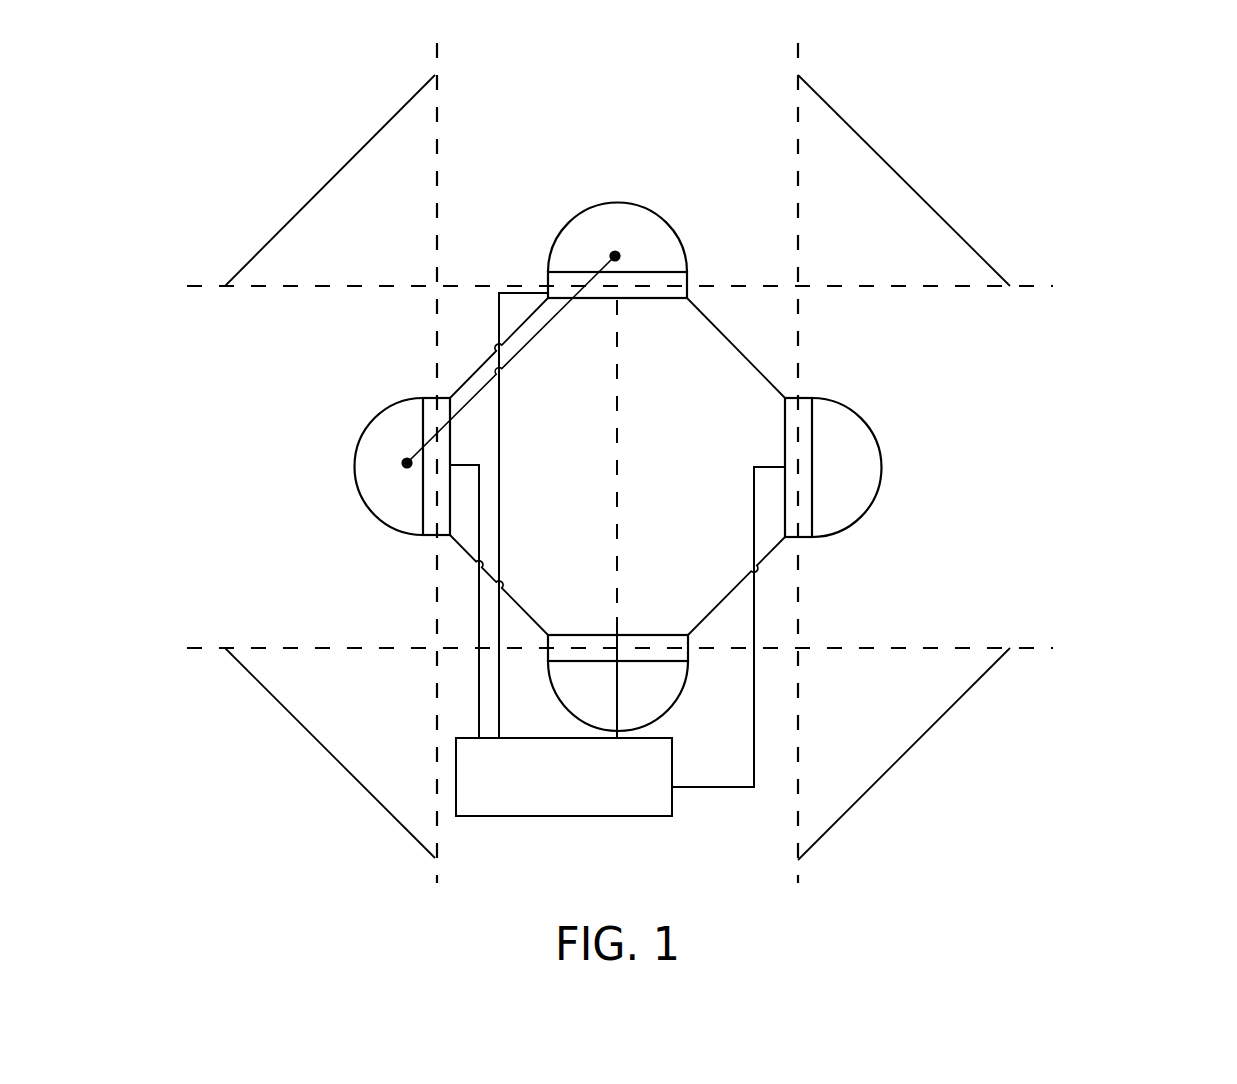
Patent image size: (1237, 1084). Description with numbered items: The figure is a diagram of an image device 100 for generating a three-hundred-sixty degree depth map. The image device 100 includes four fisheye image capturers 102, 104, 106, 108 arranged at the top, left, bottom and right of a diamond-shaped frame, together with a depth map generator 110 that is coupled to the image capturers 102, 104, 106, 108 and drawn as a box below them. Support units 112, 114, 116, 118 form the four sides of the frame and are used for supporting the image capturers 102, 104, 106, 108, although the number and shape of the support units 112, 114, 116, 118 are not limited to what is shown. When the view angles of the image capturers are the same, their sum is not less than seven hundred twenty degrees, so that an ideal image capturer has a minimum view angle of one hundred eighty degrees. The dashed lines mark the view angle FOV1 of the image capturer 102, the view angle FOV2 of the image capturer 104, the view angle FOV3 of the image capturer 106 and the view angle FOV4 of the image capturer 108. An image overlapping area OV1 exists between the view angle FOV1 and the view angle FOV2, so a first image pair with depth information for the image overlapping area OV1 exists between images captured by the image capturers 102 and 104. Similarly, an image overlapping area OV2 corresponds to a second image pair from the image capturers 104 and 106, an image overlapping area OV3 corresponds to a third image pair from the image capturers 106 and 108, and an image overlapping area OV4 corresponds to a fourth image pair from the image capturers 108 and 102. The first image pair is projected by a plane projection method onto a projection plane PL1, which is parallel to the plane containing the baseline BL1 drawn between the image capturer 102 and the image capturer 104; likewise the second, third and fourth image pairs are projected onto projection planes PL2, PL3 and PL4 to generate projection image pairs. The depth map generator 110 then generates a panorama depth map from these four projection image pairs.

The image device 100 is at (1085, 95).
The image capturer 102 is at (663, 220).
The image capturer 104 is at (355, 440).
The image capturer 106 is at (670, 707).
The image capturer 108 is at (877, 448).
The depth map generator 110 is at (573, 817).
The support unit 112 is at (477, 365).
The support unit 114 is at (527, 610).
The support unit 116 is at (738, 584).
The support unit 118 is at (717, 325).
The baseline BL1 is at (538, 337).
The view angle FOV1 is at (297, 288).
The view angle FOV2 is at (438, 118).
The view angle FOV3 is at (297, 645).
The view angle FOV4 is at (798, 118).
The projection plane PL1 is at (275, 233).
The projection plane PL2 is at (275, 698).
The projection plane PL3 is at (960, 698).
The projection plane PL4 is at (962, 233).
The image overlapping area OV1 is at (372, 215).
The image overlapping area OV2 is at (372, 713).
The image overlapping area OV3 is at (864, 713).
The image overlapping area OV4 is at (864, 215).